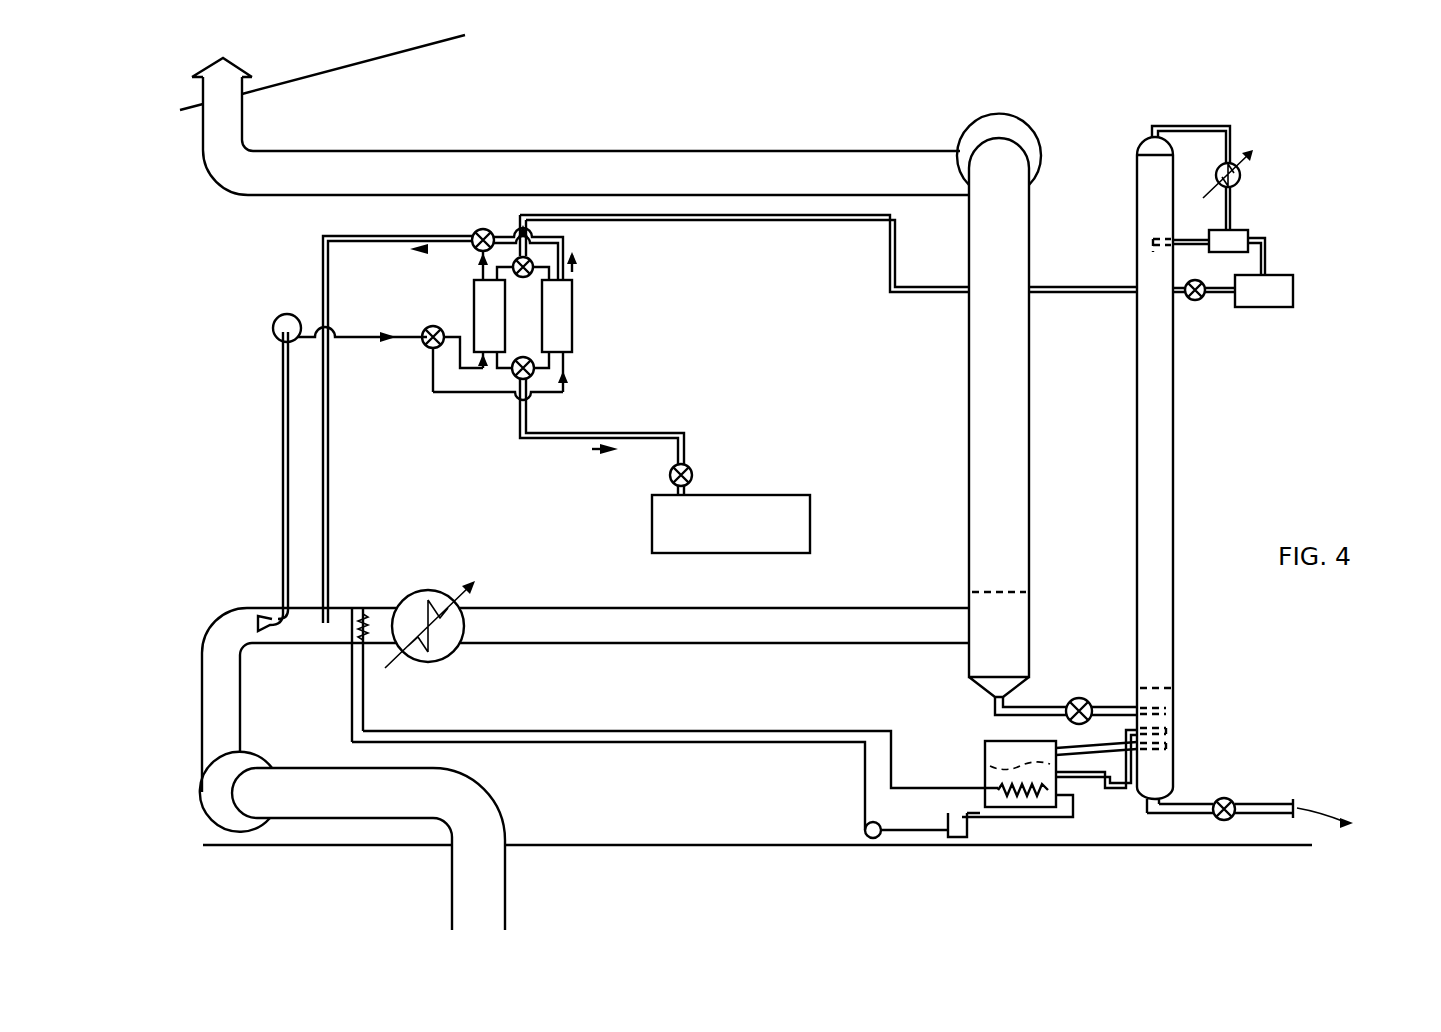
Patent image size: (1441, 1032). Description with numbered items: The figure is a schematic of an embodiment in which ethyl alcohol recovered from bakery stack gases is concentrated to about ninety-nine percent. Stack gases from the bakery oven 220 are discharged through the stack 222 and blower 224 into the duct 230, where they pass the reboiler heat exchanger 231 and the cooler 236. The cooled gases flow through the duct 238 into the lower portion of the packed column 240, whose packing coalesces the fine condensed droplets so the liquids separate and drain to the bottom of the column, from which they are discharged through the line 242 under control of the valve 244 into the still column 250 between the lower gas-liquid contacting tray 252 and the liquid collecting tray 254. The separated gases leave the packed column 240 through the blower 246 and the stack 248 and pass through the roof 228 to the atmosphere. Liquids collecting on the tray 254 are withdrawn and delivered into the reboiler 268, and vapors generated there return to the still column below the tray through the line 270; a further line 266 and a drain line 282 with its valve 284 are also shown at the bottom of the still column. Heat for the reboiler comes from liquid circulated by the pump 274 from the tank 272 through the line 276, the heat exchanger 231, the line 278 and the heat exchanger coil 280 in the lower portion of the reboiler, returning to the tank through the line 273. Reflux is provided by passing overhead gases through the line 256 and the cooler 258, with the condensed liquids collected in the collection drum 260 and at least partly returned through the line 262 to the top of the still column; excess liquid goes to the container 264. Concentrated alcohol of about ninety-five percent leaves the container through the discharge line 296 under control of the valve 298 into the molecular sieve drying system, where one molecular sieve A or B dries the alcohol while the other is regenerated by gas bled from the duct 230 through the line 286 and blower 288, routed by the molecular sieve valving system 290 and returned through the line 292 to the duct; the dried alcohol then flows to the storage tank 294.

The bakery oven 220 is at (595, 845).
The stack 222 is at (500, 812).
The blower 224 is at (265, 765).
The roof 228 is at (300, 81).
The duct 230 is at (273, 645).
The reboiler heat exchanger 231 is at (365, 617).
The cooler 236 is at (425, 590).
The duct 238 is at (565, 608).
The packed column 240 is at (1030, 478).
The line 242 is at (995, 700).
The valve 244 is at (1073, 680).
The blower 246 is at (968, 130).
The stack 248 is at (415, 150).
The still column 250 is at (1174, 492).
The lower gas-liquid contacting tray 252 is at (1157, 688).
The liquid collecting tray 254 is at (1165, 729).
The line 256 is at (1190, 124).
The cooler 258 is at (1240, 162).
The collection drum 260 is at (1236, 229).
The line 262 is at (1198, 238).
The container 264 is at (1293, 284).
The pipe 266 is at (1122, 777).
The reboiler 268 is at (985, 750).
The line 270 is at (1093, 753).
The tank 272 is at (965, 840).
The line 273 is at (1050, 820).
The pump 274 is at (865, 830).
The line 276 is at (665, 742).
The line 278 is at (565, 731).
The heat exchanger coil 280 is at (985, 782).
The drain pipe 282 is at (1170, 805).
The drain valve 284 is at (1234, 803).
The line 286 is at (283, 478).
The blower 288 is at (273, 330).
The molecular sieve valving system 290 is at (410, 347).
The line 292 is at (328, 482).
The storage tank 294 is at (717, 494).
The discharge line 296 is at (1217, 296).
The valve 298 is at (1190, 300).
The molecular sieve A is at (574, 312).
The molecular sieve B is at (470, 313).